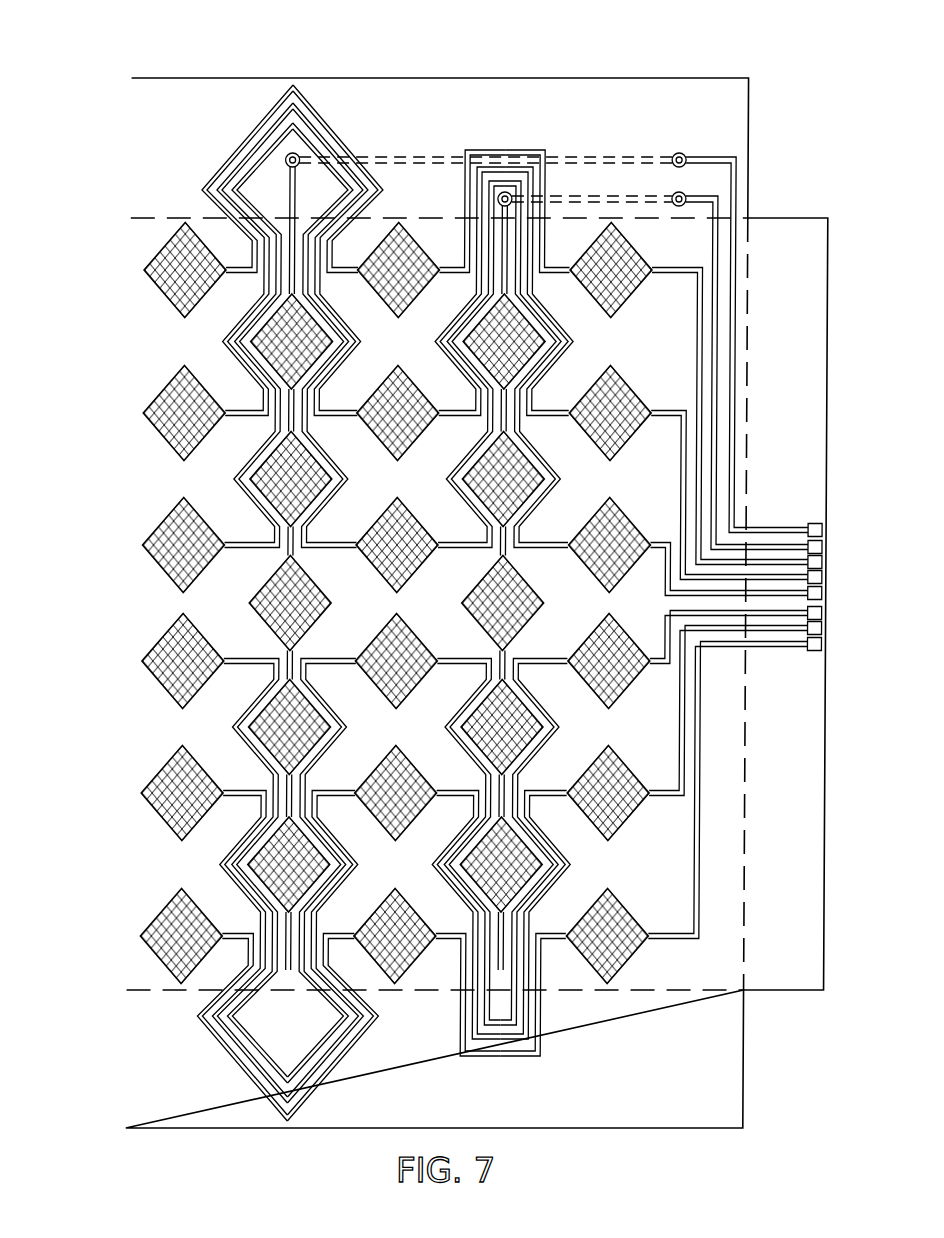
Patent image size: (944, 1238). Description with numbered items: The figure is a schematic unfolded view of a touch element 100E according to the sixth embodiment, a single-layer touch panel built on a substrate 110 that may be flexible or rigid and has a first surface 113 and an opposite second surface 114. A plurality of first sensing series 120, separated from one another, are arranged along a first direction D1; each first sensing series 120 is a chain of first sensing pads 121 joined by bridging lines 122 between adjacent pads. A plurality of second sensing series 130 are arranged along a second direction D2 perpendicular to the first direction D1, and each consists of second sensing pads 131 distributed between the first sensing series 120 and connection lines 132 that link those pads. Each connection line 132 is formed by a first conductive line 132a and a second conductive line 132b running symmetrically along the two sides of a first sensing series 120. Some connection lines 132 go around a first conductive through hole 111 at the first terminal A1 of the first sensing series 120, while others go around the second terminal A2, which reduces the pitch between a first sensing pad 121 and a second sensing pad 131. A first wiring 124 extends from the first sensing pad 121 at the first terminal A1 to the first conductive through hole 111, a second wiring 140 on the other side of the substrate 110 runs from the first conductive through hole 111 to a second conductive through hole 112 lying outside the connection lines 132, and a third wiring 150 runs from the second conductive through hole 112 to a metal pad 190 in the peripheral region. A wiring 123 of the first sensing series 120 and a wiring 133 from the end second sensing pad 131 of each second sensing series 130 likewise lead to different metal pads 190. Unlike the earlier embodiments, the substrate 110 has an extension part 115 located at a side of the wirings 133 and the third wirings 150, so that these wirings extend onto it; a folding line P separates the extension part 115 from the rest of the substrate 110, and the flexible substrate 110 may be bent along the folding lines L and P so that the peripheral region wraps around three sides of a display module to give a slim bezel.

The touch element 100E is at (712, 53).
The substrate 110 is at (164, 104).
The first conductive through hole 111 is at (285, 157).
The second conductive through hole 112 is at (673, 156).
The first surface 113 is at (154, 831).
The second surface 114 is at (152, 892).
The extension part 115 is at (794, 228).
The first sensing series 120 is at (382, 504).
The first sensing pad 121 is at (284, 358).
The bridging line 122 is at (289, 554).
The wiring 123 is at (296, 655).
The first wiring 124 is at (289, 198).
The second sensing series 130 is at (366, 599).
The second sensing pad 131 is at (175, 308).
The connection line 132 is at (401, 561).
The first conductive line 132a is at (278, 37).
The second conductive line 132b is at (253, 121).
The wiring 133 is at (699, 563).
The second wiring 140 is at (612, 197).
The third wiring 150 is at (711, 197).
The metal pad 190 is at (815, 651).
The first terminal A1 is at (301, 175).
The second terminal A2 is at (284, 984).
The first direction D1 is at (168, 55).
The second direction D2 is at (118, 95).
The folding line L is at (147, 217).
The folding line P is at (744, 950).